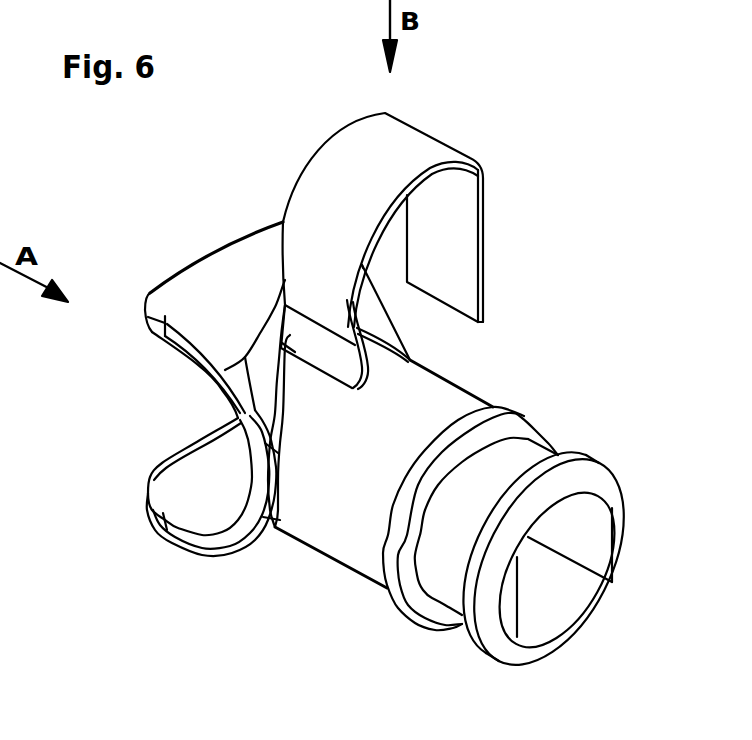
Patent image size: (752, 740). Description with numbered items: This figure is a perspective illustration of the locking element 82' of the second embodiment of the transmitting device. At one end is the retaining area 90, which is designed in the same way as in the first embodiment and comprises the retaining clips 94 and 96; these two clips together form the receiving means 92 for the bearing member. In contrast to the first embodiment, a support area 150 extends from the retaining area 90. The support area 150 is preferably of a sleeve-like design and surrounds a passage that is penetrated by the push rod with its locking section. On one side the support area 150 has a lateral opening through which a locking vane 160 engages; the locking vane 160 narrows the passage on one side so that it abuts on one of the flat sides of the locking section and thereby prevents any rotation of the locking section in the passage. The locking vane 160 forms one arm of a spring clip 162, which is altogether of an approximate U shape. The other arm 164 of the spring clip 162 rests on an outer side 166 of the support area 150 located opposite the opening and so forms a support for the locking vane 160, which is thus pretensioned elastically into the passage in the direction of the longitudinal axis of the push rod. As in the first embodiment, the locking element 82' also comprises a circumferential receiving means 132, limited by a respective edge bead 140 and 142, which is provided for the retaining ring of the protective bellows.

The locking element 82' is at (476, 313).
The retaining area 90 is at (215, 572).
The receiving means 92 is at (203, 470).
The retaining clip 94 is at (228, 275).
The retaining clip 96 is at (190, 497).
The circumferential receiving means 132 is at (517, 458).
The edge bead 140 is at (597, 484).
The edge bead 142 is at (523, 428).
The support area 150 is at (354, 530).
The locking vane 160 is at (447, 230).
The spring clip 162 is at (398, 146).
The other arm 164 is at (225, 370).
The outer side 166 is at (310, 510).